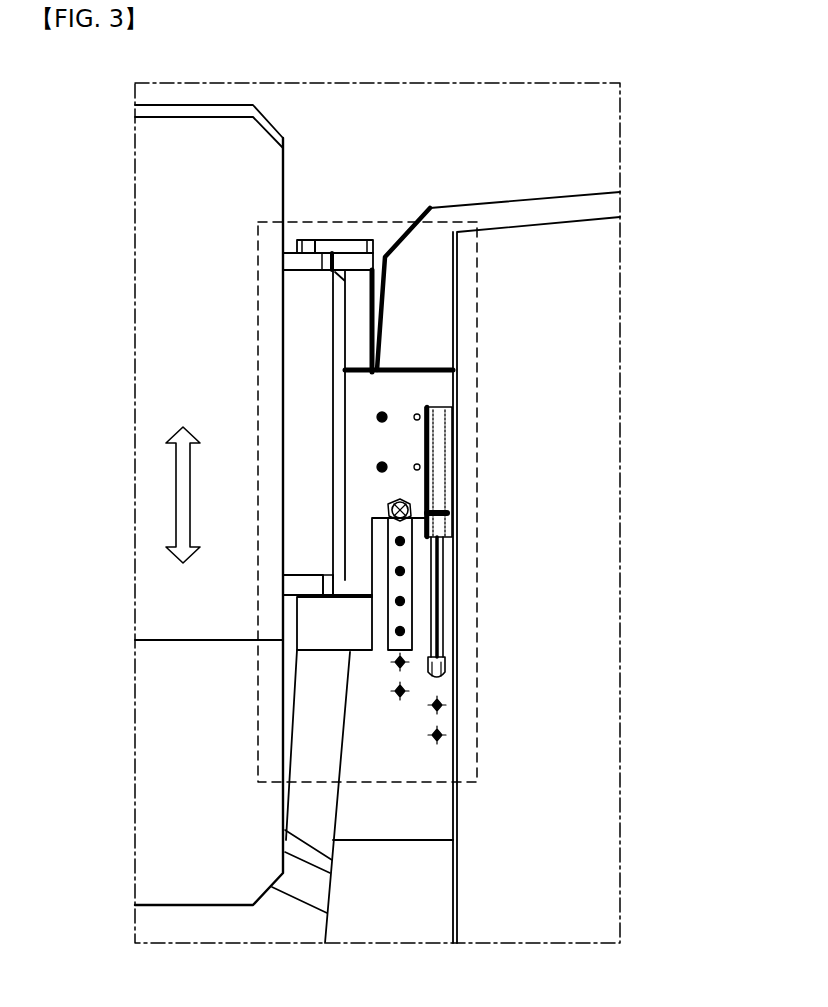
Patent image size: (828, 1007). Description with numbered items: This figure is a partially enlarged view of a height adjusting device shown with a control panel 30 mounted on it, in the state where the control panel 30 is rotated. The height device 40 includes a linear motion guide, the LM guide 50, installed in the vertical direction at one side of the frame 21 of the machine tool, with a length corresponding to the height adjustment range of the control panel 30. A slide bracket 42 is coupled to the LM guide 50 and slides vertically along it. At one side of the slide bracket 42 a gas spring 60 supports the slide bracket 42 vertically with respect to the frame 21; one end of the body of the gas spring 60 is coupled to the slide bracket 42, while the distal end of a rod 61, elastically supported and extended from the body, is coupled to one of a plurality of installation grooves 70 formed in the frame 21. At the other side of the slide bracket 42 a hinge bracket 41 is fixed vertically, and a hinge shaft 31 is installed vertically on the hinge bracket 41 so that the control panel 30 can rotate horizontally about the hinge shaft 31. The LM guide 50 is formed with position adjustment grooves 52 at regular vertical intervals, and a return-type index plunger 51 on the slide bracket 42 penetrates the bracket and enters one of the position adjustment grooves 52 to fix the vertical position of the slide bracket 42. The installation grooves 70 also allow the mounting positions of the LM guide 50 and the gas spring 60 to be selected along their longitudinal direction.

The frame 21 is at (600, 203).
The control panel 30 is at (158, 265).
The hinge shaft 31 is at (290, 375).
The height device 40 is at (392, 221).
The hinge bracket 41 is at (333, 240).
The slide bracket 42 is at (432, 385).
The linear motion (LM) guide 50 is at (412, 583).
The return-type index plunger 51 is at (435, 508).
The position adjustment grooves 52 is at (412, 638).
The gas spring 60 is at (440, 437).
The rod 61 is at (440, 620).
The installation grooves 70 is at (395, 692).